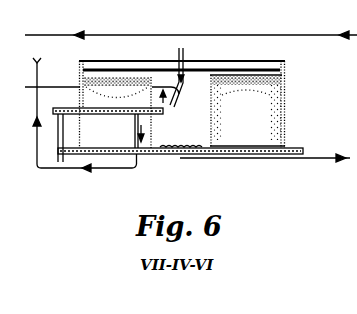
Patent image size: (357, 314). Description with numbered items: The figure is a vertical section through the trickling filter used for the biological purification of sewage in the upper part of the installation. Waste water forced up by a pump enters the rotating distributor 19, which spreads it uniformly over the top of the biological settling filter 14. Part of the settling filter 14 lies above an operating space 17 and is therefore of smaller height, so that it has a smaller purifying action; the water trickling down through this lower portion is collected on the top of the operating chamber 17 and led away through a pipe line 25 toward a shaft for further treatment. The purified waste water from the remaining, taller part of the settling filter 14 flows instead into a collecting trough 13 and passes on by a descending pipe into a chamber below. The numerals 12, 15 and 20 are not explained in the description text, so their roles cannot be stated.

The first filter compartment 12 is at (43, 87).
The collecting trough 13 is at (181, 146).
The biological settling filter 14 is at (247, 111).
The housing 15 is at (287, 97).
The operating space 17 is at (108, 135).
The rotating distributor 19 is at (194, 69).
The return line 20 is at (327, 37).
The pipe line 25 is at (142, 165).